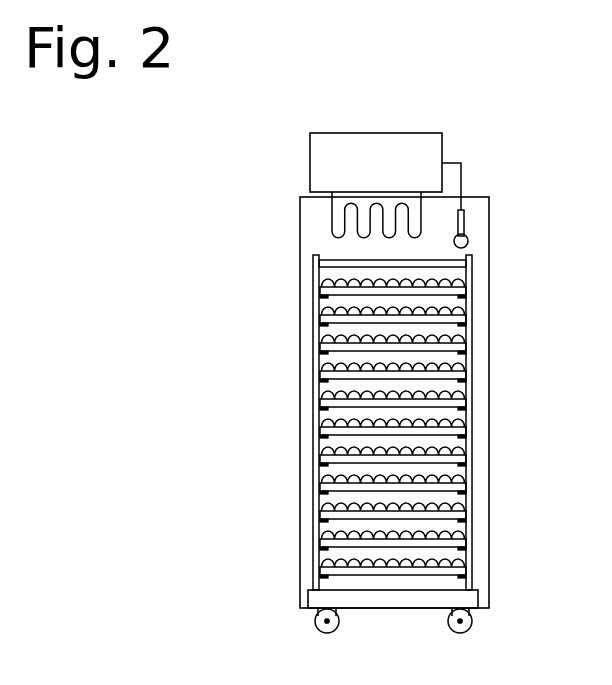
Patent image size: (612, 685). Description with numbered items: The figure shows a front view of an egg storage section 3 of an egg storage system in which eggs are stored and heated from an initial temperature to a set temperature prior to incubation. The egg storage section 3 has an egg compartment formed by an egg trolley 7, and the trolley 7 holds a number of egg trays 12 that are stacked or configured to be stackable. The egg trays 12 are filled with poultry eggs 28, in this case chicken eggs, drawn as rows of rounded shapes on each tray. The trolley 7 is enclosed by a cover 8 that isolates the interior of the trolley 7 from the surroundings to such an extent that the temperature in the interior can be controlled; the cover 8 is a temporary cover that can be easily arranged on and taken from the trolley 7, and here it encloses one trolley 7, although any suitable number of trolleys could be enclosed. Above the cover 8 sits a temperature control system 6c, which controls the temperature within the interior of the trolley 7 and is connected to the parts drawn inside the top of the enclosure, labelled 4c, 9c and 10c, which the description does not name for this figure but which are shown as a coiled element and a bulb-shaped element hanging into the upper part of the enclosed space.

The egg storage section 3 is at (466, 128).
The housing 4c is at (482, 191).
The temperature control system 6c is at (338, 128).
The egg trolley 7 is at (409, 614).
The cover 8 is at (498, 357).
The heat exchanger coil 9c is at (342, 219).
The temperature sensor 10c is at (466, 241).
The egg trays 12 is at (458, 431).
The poultry eggs 28 is at (444, 281).